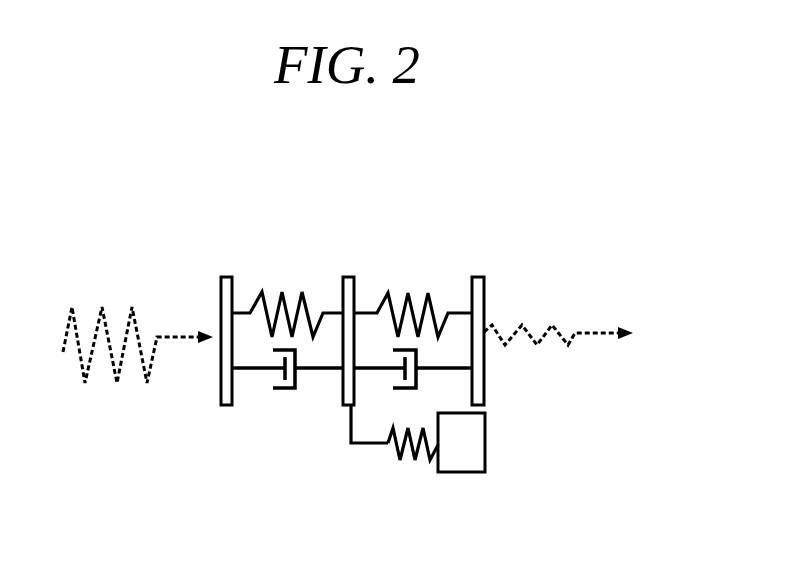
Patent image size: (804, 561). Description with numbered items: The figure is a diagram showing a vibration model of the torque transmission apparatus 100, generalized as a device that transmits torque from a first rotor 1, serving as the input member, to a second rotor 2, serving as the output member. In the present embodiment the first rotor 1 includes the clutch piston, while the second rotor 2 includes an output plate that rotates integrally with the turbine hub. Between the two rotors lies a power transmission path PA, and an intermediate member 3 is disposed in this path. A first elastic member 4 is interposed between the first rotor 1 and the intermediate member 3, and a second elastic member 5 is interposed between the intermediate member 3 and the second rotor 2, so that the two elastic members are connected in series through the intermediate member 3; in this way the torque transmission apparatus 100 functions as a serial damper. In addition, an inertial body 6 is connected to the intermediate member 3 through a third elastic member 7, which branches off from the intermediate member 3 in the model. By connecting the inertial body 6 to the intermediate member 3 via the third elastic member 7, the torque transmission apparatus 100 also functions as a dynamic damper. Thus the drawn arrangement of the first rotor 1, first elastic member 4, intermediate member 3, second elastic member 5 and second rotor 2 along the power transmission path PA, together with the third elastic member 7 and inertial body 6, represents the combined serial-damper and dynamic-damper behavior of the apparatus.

The first rotor 1 is at (228, 405).
The second rotor 2 is at (484, 385).
The intermediate member 3 is at (343, 392).
The first elastic member 4 is at (270, 300).
The second elastic member 5 is at (393, 294).
The inertial body 6 is at (460, 472).
The third elastic member 7 is at (397, 452).
The torque transmission apparatus 100 is at (431, 220).
The power transmission path PA is at (416, 268).